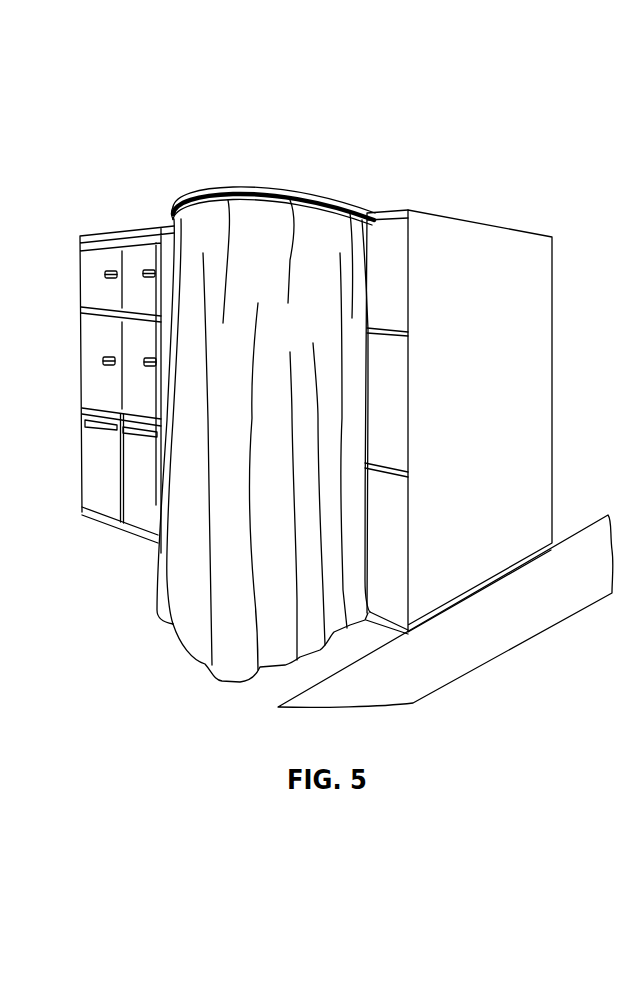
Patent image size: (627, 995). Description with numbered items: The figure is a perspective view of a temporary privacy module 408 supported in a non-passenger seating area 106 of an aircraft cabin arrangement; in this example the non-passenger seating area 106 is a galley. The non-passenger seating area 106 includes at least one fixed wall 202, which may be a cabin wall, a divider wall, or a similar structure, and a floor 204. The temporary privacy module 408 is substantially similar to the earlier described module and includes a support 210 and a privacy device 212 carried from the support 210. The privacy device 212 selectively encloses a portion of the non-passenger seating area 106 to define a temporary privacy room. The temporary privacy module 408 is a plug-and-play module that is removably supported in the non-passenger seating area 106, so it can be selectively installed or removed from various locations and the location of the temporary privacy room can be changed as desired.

The non-passenger seating area 106 is at (107, 122).
The temporary privacy module 408 is at (272, 357).
The support 210 is at (255, 190).
The privacy device 212 is at (323, 220).
The fixed wall 202 is at (387, 237).
The floor 204 is at (307, 672).